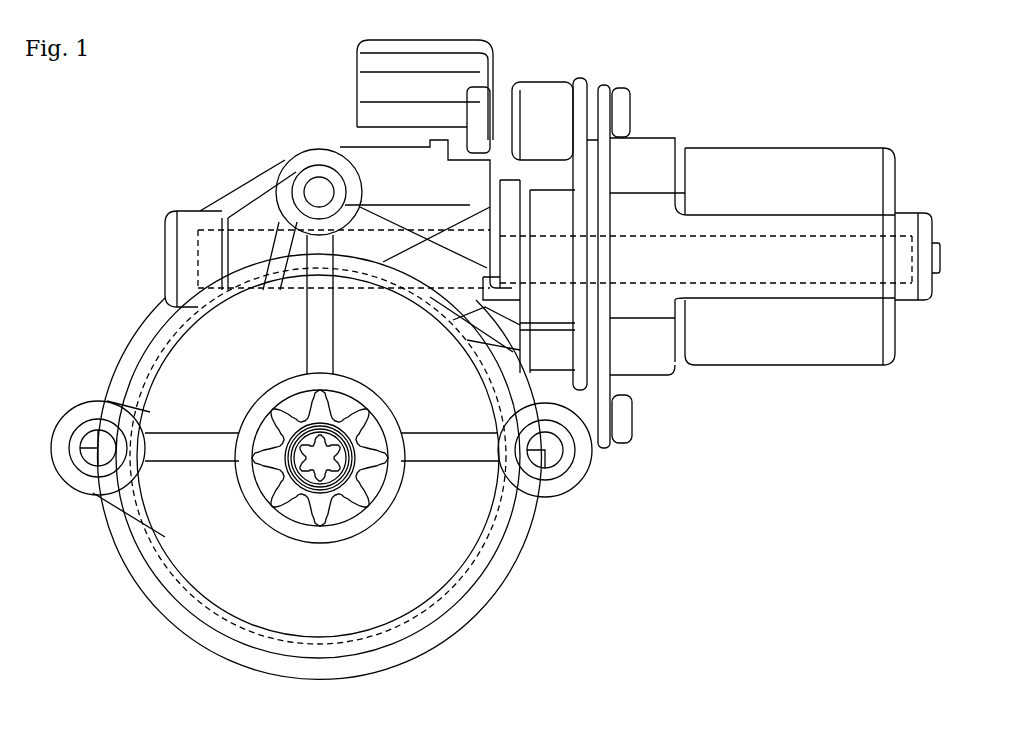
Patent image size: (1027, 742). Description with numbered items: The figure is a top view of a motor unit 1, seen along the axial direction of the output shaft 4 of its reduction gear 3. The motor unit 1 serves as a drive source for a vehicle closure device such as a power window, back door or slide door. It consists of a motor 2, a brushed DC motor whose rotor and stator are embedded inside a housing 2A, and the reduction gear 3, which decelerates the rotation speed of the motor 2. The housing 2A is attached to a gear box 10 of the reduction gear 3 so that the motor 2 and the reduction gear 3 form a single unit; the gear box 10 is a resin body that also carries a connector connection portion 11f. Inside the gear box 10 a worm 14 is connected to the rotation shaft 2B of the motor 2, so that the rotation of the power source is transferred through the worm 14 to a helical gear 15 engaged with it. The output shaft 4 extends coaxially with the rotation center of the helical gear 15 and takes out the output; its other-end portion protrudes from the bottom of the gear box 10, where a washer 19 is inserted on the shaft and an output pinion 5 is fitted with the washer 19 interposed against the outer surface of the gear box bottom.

The motor unit 1 is at (495, 369).
The motor 2 is at (720, 272).
The housing 2A is at (703, 352).
The rotation shaft 2B is at (755, 232).
The reduction gear 3 is at (390, 244).
The output shaft 4 is at (368, 438).
The output pinion 5 is at (301, 408).
The gear box 10 is at (321, 423).
The connector connection portion 11f is at (357, 84).
The worm 14 is at (196, 262).
The helical gear 15 is at (406, 618).
The washer 19 is at (365, 494).